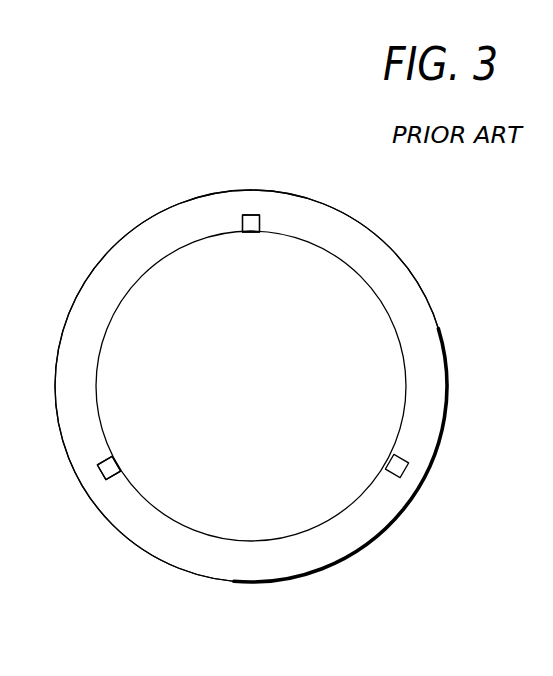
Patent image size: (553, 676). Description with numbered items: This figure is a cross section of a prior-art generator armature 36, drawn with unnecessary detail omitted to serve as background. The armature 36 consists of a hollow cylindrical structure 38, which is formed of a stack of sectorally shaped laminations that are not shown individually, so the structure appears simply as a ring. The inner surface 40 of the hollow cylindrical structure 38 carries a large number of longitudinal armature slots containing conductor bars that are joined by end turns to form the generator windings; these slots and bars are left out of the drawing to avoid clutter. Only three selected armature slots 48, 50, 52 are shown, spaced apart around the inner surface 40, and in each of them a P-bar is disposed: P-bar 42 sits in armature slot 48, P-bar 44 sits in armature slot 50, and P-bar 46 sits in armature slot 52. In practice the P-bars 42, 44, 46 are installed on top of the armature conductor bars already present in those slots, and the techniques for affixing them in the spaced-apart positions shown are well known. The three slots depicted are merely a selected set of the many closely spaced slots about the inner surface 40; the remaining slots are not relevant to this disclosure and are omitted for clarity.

The armature 36 is at (455, 300).
The hollow cylindrical structure 38 is at (398, 265).
The inner surface 40 is at (366, 279).
The P-bar 42 is at (253, 233).
The P-bar 44 is at (115, 468).
The P-bar 46 is at (388, 466).
The armature slot 48 is at (243, 223).
The armature slot 50 is at (102, 459).
The armature slot 52 is at (404, 454).